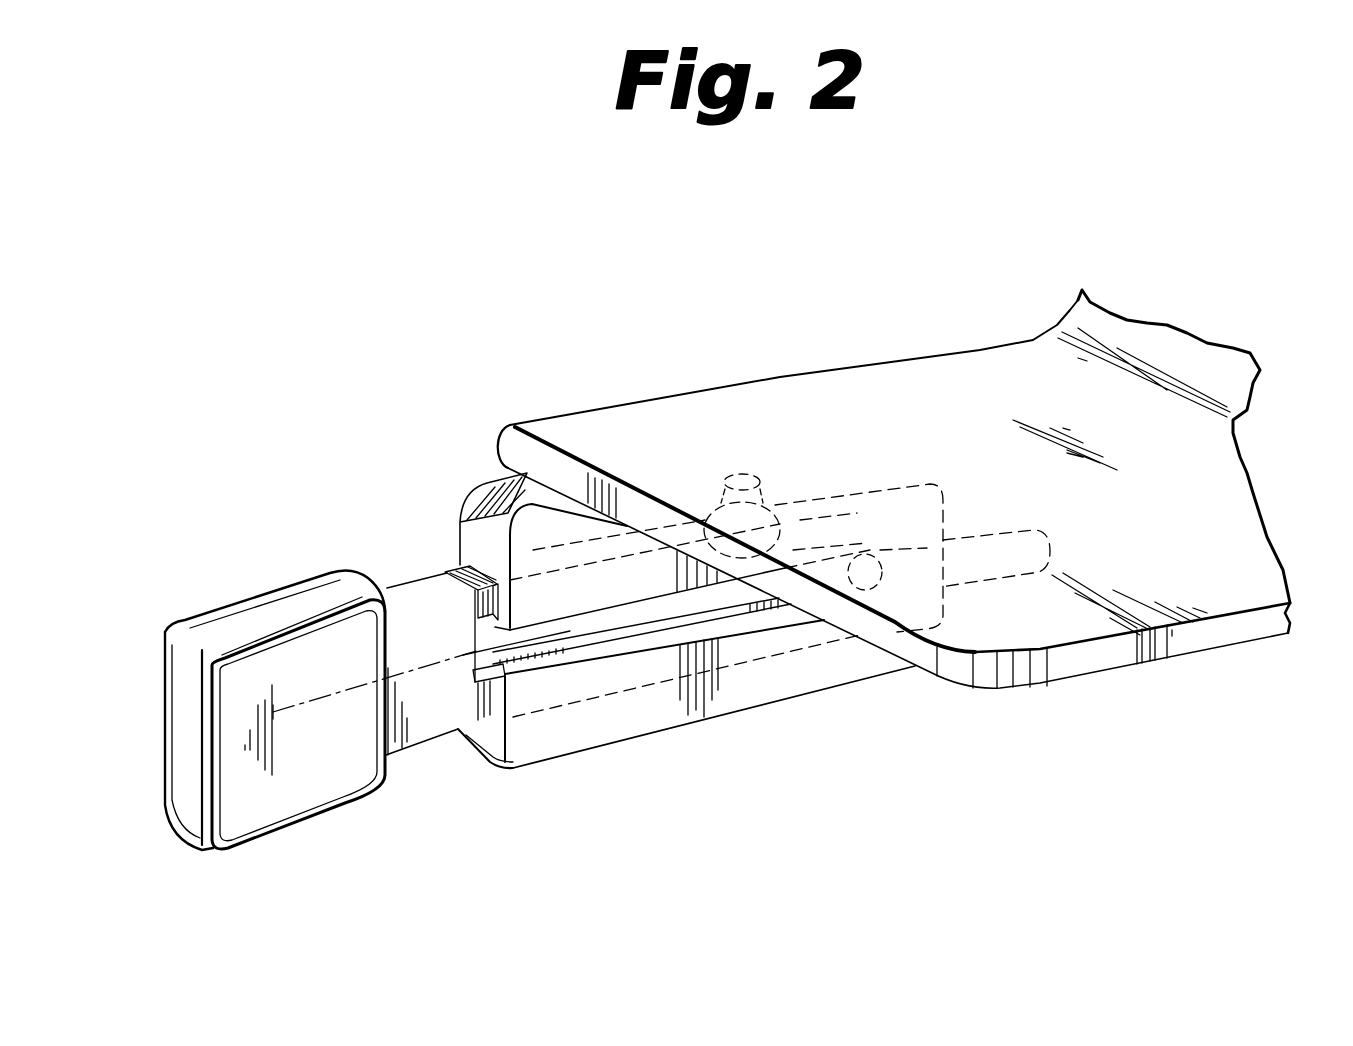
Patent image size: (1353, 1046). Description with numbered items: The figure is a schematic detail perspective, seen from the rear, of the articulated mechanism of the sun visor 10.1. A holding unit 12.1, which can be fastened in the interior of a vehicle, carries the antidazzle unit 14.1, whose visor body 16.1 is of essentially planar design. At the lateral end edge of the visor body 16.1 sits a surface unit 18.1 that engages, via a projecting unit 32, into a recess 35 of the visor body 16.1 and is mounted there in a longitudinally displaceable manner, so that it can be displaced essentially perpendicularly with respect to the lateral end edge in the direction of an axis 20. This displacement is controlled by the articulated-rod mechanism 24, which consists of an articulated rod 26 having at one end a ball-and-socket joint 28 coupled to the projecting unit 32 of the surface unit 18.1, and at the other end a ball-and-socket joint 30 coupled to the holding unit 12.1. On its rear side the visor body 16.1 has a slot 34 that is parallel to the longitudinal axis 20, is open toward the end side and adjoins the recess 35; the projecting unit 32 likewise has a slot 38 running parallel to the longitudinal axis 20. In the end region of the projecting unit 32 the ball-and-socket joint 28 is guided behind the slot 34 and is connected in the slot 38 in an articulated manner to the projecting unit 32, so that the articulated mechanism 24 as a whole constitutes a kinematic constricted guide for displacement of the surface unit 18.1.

The sun visor 10.1 is at (862, 332).
The holding unit 12.1 is at (590, 414).
The antidazzle unit 14.1 is at (735, 704).
The visor body 16.1 is at (851, 675).
The surface unit 18.1 is at (293, 807).
The axis 20 is at (298, 710).
The articulated-rod mechanism 24 is at (850, 568).
The articulated rod 26 is at (823, 550).
The ball-and-socket joint 28 is at (963, 588).
The ball-and-socket joint 30 is at (713, 513).
The projecting unit 32 is at (447, 720).
The slot 34 is at (578, 655).
The recess 35 is at (470, 553).
The slot 38 is at (472, 622).